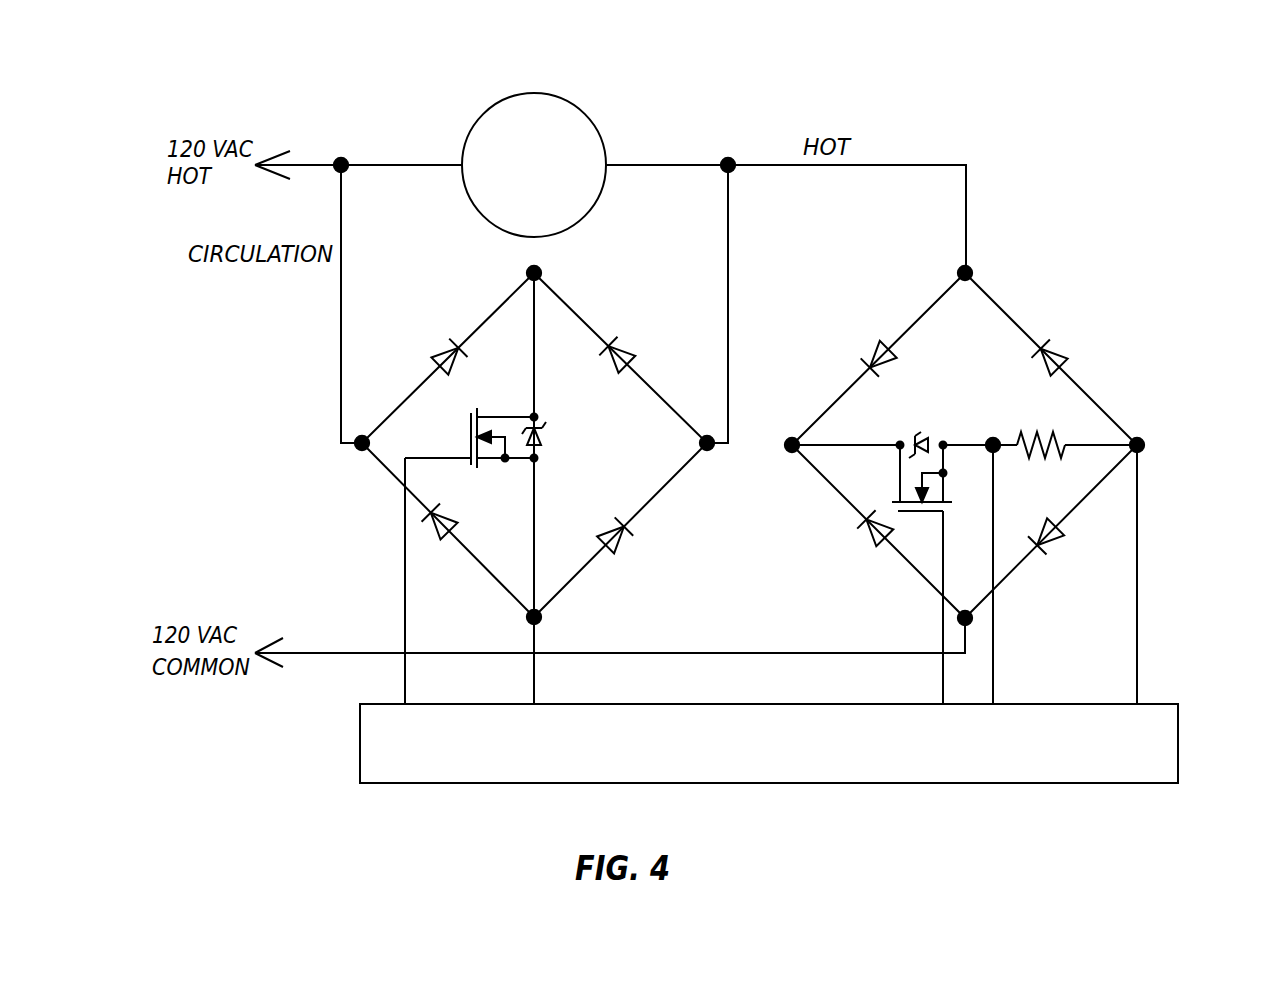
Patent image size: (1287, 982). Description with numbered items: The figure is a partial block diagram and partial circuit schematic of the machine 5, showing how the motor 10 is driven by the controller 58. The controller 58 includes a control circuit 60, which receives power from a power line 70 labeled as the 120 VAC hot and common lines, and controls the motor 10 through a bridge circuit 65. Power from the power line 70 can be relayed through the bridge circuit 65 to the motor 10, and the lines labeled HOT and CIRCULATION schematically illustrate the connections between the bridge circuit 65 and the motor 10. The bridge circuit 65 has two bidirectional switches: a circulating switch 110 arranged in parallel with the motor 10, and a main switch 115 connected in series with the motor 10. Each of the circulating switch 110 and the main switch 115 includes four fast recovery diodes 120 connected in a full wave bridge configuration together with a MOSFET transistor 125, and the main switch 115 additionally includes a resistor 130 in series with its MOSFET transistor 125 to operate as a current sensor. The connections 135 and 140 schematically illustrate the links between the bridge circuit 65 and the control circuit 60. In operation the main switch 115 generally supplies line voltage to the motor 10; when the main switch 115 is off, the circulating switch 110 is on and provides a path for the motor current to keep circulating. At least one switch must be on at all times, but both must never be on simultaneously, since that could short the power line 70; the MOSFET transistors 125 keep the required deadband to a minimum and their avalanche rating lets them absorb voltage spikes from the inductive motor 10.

The motor control system 5 is at (570, 37).
The motor 10 is at (488, 107).
The controller 58 is at (280, 534).
The control circuit 60 is at (980, 783).
The bridge circuit 65 is at (1030, 167).
The power line 70 is at (313, 160).
The circulating switch 110 is at (410, 334).
The main switch 115 is at (1015, 299).
The fast recovery diode 120 is at (444, 344).
The MOSFET transistor 125 is at (548, 435).
The resistor 130 is at (1050, 458).
The connection 135 is at (372, 680).
The connection 140 is at (1168, 674).